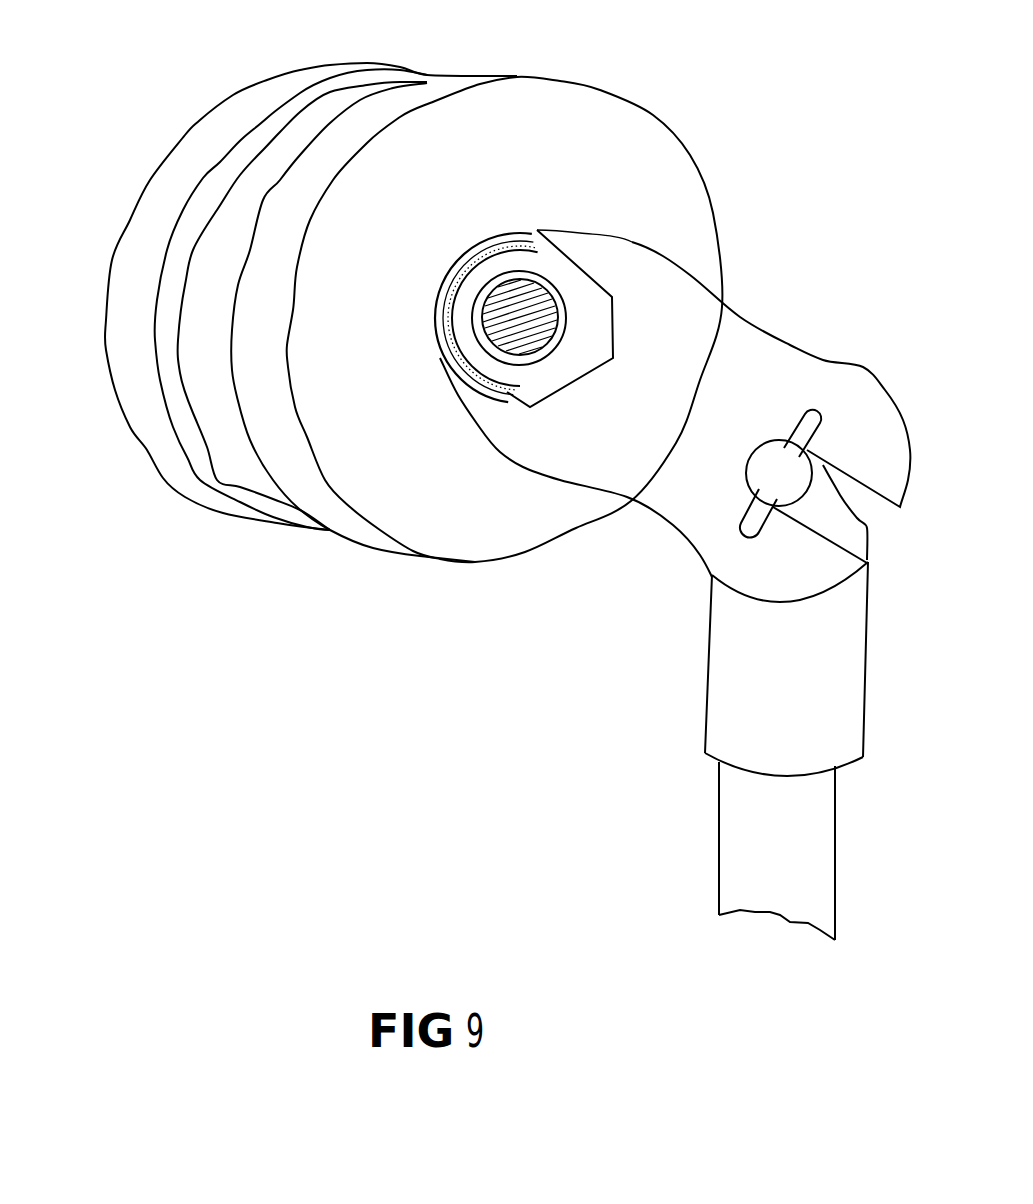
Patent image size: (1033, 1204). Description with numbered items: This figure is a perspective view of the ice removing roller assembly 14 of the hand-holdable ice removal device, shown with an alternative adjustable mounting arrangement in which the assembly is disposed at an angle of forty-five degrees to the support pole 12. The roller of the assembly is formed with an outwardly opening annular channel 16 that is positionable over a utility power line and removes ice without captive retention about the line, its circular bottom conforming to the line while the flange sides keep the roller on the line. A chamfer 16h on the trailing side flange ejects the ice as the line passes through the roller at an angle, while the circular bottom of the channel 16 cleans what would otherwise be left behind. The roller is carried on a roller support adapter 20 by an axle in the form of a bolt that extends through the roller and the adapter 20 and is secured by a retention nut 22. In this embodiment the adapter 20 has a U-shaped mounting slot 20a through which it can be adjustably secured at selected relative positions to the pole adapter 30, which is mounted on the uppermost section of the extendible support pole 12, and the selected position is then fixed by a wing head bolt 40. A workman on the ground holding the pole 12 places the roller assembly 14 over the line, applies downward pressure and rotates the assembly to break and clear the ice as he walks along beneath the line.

The support pole 12 is at (730, 866).
The ice removing roller assembly 14 is at (443, 565).
The annular channel 16 is at (200, 372).
The chamfer 16h is at (190, 227).
The roller support adapter 20 is at (737, 383).
The U-shaped mounting slot 20a is at (865, 533).
The retention nut 22 is at (520, 268).
The pole adapter 30 is at (733, 668).
The wing head bolt 40 is at (780, 476).